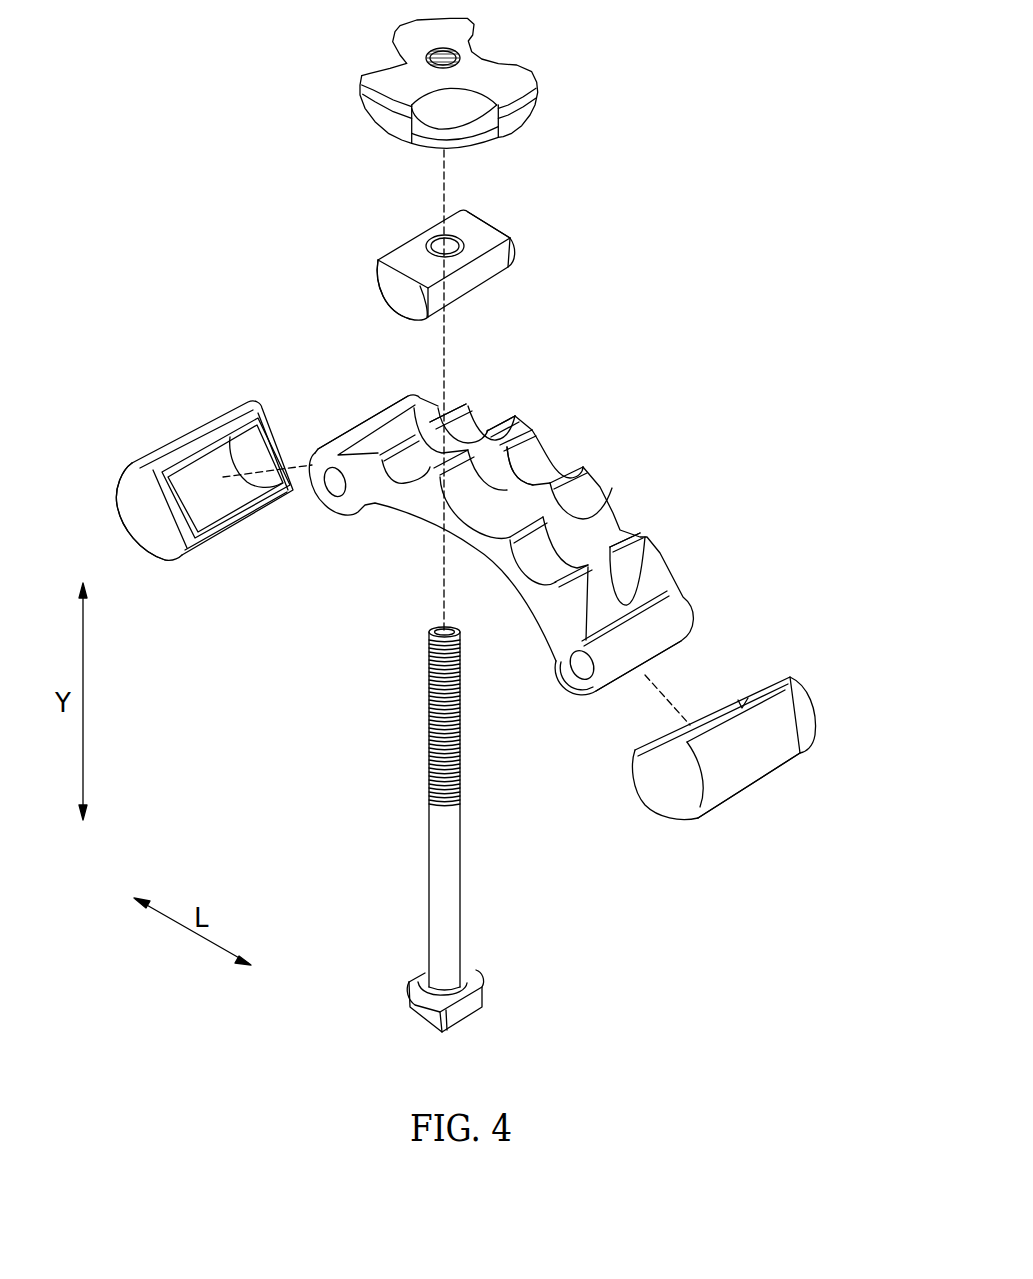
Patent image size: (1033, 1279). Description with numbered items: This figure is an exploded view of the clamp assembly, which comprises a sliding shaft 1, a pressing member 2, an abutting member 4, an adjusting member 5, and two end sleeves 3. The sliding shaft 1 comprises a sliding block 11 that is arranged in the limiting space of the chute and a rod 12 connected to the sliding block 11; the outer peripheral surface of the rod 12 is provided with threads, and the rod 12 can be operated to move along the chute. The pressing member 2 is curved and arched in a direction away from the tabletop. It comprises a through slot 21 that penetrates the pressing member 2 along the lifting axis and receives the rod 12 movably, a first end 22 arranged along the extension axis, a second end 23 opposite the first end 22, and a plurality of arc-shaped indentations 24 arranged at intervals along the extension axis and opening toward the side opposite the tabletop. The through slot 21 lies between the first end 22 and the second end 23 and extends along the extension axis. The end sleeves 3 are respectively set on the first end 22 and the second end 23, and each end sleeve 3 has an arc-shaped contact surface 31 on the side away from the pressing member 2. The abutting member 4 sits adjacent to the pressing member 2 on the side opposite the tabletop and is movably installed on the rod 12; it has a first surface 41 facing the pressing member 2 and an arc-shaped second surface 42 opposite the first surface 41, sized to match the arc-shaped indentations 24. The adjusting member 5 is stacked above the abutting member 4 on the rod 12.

The sliding shaft 1 is at (410, 833).
The sliding block 11 is at (430, 1018).
The rod 12 is at (429, 727).
The pressing member 2 is at (518, 420).
The through slot 21 is at (557, 513).
The first end 22 is at (358, 430).
The second end 23 is at (675, 620).
The arc-shaped indentations 24 is at (477, 412).
The end sleeves 3 is at (135, 483).
The contact surface 31 is at (128, 535).
The abutting member 4 is at (387, 281).
The first surface 41 is at (413, 318).
The second surface 42 is at (480, 233).
The adjusting member 5 is at (483, 63).